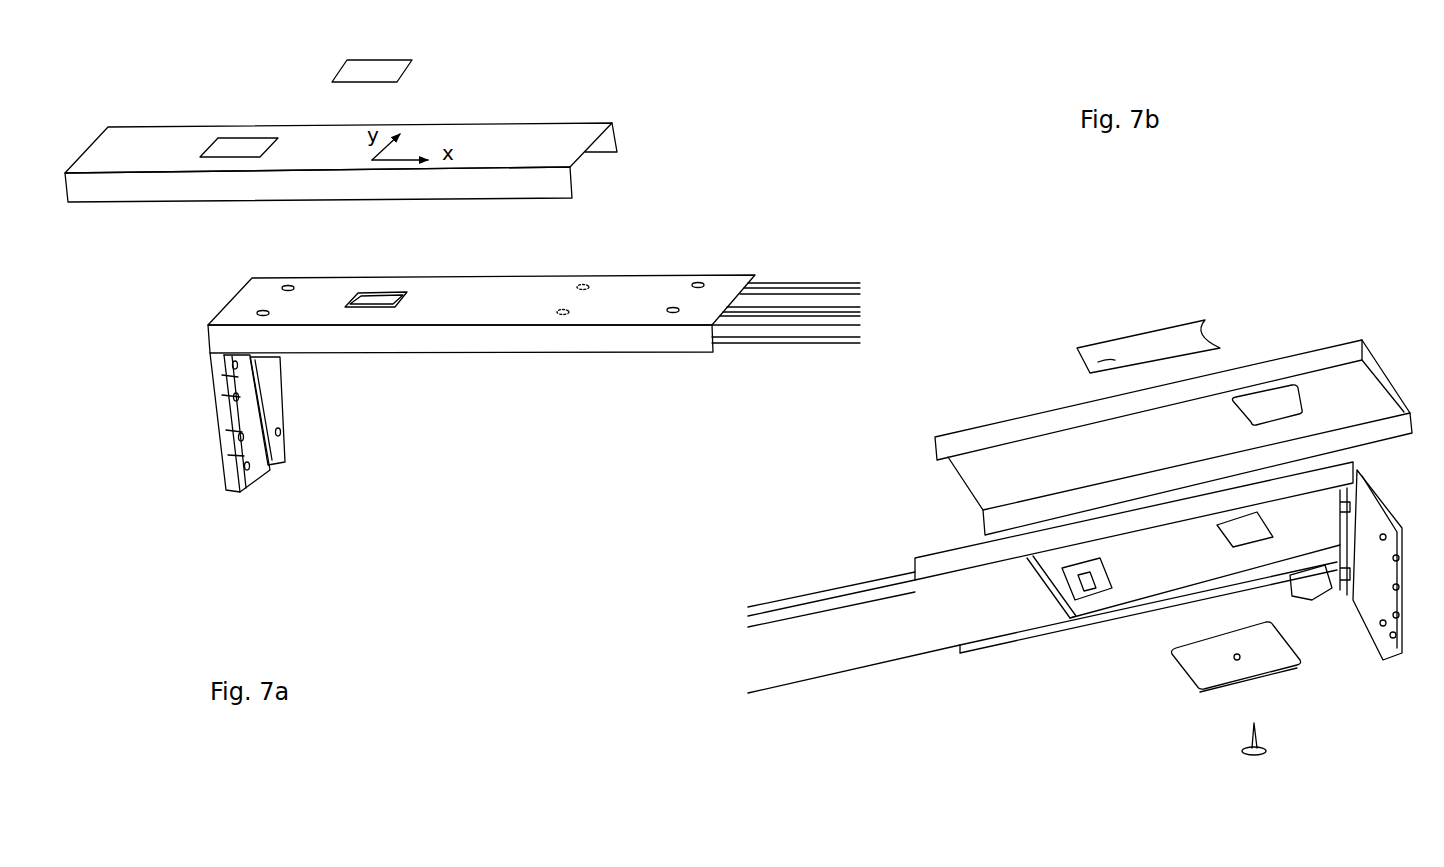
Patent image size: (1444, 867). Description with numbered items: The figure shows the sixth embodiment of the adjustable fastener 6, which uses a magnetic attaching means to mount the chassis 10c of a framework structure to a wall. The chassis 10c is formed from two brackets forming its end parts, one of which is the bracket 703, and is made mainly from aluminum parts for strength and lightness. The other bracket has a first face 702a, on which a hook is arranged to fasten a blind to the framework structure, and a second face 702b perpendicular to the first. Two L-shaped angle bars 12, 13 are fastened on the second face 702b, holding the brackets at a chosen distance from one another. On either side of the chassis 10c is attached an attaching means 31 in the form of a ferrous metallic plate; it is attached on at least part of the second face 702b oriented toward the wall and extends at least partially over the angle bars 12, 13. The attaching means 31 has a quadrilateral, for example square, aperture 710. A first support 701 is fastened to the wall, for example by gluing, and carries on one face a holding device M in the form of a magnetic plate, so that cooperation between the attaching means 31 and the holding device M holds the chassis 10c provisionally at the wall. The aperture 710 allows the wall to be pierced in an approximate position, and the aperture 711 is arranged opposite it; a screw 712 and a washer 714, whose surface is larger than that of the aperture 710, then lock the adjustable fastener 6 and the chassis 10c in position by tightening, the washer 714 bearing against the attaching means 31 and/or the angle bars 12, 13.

In FIG. 7A, the attaching means 31 is at (555, 135).
In FIG. 7A, the aperture 710 is at (242, 148).
In FIG. 7B, the aperture 710 is at (1282, 403).
In FIG. 7A, the first support 701 is at (372, 72).
In FIG. 7B, the first support 701 is at (1128, 350).
In FIG. 7A, the second face 702b is at (248, 300).
In FIG. 7A, the first face 702a is at (218, 410).
In FIG. 7A, the aperture 711 is at (385, 303).
In FIG. 7B, the aperture 711 is at (1237, 540).
In FIG. 7A, the chassis 10c is at (498, 329).
In FIG. 7A, the L-shaped angle bar 13 is at (785, 288).
In FIG. 7A, the L-shaped angle bar 12 is at (752, 333).
In FIG. 7B, the adjustable fastener 6 is at (1092, 473).
In FIG. 7B, the holding device M is at (1088, 367).
In FIG. 7B, the bracket 703 is at (1408, 632).
In FIG. 7B, the washer 714 is at (1282, 666).
In FIG. 7B, the screw 712 is at (1244, 741).